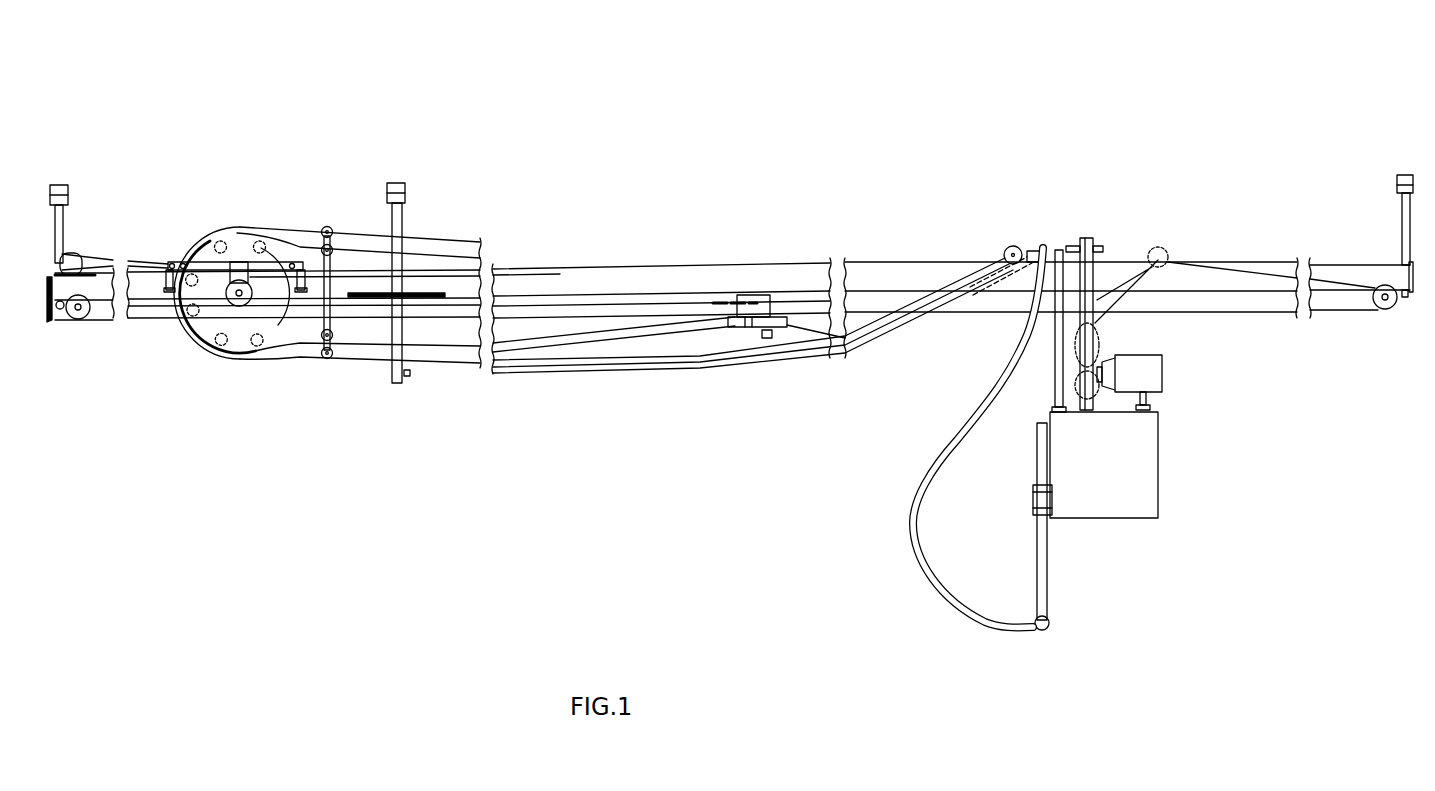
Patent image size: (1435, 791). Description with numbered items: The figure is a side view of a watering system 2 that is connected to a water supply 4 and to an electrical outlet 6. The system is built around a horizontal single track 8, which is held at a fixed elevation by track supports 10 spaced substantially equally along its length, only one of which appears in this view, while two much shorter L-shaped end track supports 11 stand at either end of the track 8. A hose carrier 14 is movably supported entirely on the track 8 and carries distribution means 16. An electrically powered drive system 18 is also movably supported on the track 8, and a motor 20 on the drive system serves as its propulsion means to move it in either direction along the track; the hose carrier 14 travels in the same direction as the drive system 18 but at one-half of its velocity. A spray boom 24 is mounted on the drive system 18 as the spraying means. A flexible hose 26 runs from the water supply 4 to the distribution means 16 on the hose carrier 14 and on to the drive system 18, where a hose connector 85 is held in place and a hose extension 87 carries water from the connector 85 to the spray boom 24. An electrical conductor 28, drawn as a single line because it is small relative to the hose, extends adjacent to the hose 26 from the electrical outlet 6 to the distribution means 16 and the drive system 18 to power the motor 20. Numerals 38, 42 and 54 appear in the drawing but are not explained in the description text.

The watering system 2 is at (737, 120).
The water supply 4 is at (767, 338).
The electrical outlet 6 is at (745, 330).
The track 8 is at (905, 278).
The track support 10 is at (397, 215).
The end track support 11 is at (60, 227).
The hose carrier 14 is at (168, 263).
The distribution means 16 is at (200, 247).
The drive system 18 is at (1113, 250).
The motor 20 is at (1157, 373).
The spray boom 24 is at (1053, 635).
The flexible hose 26 is at (443, 242).
The electrical conductor 28 is at (275, 237).
The wheel 38 is at (1410, 290).
The wheel 42 is at (57, 313).
The pulley 54 is at (327, 312).
The hose connector 85 is at (1050, 242).
The hose extension 87 is at (965, 432).